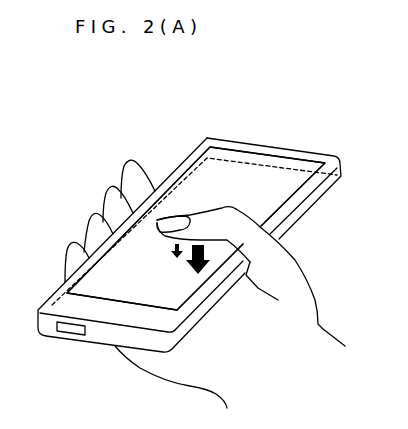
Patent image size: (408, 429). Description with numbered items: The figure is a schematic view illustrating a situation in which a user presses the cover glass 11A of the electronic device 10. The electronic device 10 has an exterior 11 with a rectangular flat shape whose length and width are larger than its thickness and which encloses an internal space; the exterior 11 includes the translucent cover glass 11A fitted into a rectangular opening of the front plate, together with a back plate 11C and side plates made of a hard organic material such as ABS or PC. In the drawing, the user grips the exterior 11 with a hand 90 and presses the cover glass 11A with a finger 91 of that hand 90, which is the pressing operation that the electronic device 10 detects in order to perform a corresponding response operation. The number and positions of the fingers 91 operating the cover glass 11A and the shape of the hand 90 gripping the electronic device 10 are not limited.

The electronic device 10 is at (282, 130).
The exterior 11 is at (206, 137).
The cover glass 11A is at (196, 158).
The back plate 11C is at (184, 192).
The hand 90 is at (322, 345).
The finger 91 is at (248, 204).